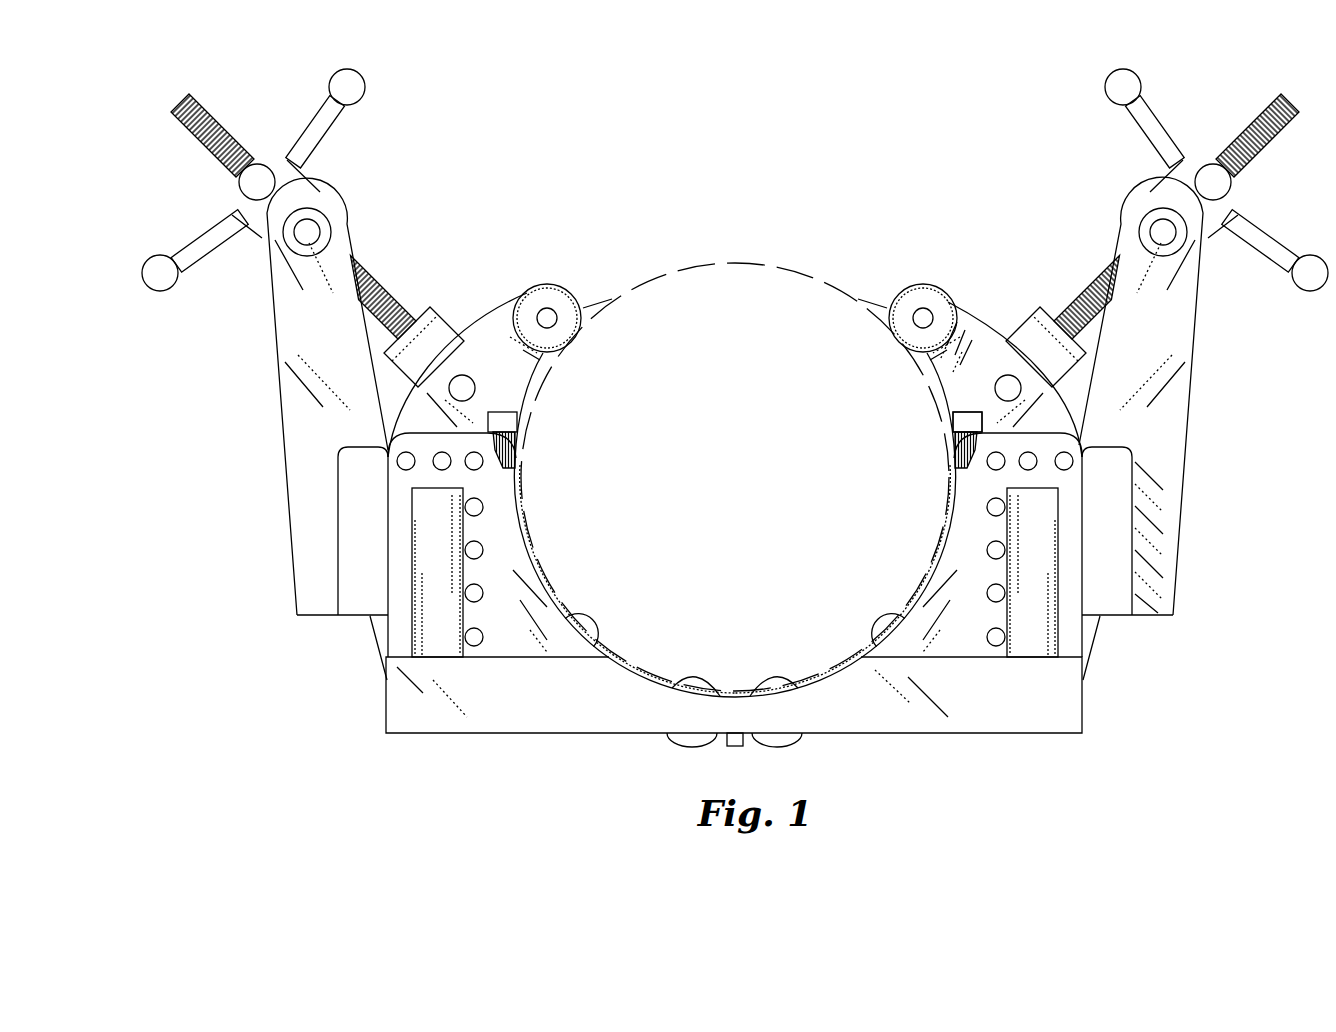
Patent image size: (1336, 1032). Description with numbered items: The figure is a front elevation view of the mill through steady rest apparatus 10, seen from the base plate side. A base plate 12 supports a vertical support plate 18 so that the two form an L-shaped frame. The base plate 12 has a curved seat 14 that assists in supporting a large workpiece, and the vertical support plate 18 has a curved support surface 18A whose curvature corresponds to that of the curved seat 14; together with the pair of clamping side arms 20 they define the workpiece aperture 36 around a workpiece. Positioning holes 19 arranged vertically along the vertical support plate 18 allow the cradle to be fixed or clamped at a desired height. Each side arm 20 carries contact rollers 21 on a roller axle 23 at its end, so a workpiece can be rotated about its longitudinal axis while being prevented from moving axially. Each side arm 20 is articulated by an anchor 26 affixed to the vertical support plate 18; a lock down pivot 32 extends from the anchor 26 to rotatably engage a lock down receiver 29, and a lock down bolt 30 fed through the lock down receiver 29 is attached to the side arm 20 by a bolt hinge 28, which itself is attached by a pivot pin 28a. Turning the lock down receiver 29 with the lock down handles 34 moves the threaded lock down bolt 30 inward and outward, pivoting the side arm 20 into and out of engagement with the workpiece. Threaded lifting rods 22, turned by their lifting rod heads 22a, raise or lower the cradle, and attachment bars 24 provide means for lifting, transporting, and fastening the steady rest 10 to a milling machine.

The mill through steady rest apparatus 10 is at (735, 423).
The base plate 12 is at (734, 728).
The curved seat 14 is at (807, 681).
The vertical support plate 18 is at (507, 630).
The curved support surface 18A is at (930, 562).
The positioning holes 19 is at (484, 509).
The side arm 20 is at (498, 408).
The contact rollers 21 is at (572, 295).
The threaded lifting rods 22 is at (955, 446).
The lifting rod head 22a is at (969, 404).
The roller axle 23 is at (924, 316).
The attachment bars 24 is at (1045, 609).
The anchor 26 is at (297, 423).
The bolt hinge 28 is at (1067, 363).
The pivot pin 28a is at (468, 378).
The lock down receiver 29 is at (282, 166).
The lock down bolt 30 is at (1262, 112).
The lock down pivot 32 is at (1165, 238).
The lock down handles 34 is at (354, 83).
The workpiece aperture 36 is at (740, 478).